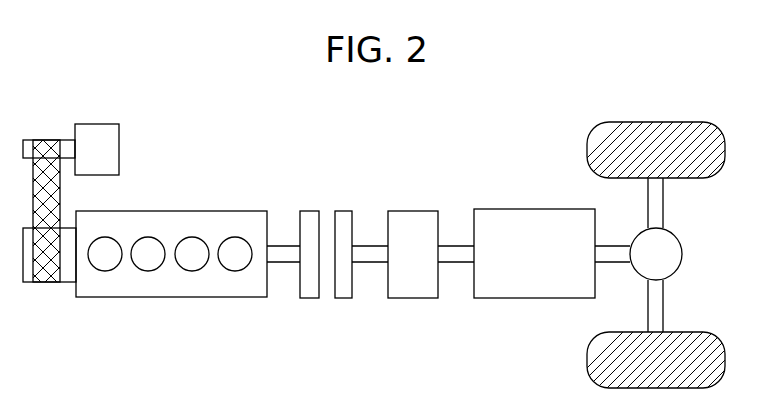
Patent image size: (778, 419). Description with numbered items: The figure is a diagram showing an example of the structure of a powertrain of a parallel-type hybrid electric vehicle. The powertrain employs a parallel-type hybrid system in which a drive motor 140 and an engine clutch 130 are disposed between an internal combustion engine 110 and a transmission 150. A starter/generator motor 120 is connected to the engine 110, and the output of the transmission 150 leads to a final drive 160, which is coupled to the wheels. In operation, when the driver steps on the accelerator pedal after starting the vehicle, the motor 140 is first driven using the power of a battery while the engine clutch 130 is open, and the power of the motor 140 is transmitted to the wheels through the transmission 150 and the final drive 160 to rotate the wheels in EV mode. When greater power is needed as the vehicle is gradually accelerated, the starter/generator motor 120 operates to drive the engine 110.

The internal combustion engine 110 is at (231, 210).
The starter/generator motor 120 is at (123, 133).
The engine clutch 130 is at (350, 210).
The drive motor 140 is at (419, 210).
The transmission 150 is at (566, 209).
The final drive 160 is at (683, 242).